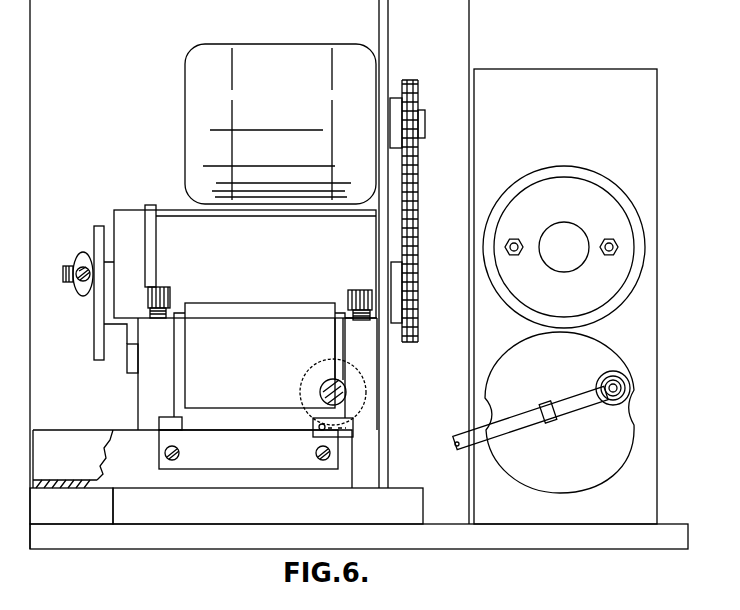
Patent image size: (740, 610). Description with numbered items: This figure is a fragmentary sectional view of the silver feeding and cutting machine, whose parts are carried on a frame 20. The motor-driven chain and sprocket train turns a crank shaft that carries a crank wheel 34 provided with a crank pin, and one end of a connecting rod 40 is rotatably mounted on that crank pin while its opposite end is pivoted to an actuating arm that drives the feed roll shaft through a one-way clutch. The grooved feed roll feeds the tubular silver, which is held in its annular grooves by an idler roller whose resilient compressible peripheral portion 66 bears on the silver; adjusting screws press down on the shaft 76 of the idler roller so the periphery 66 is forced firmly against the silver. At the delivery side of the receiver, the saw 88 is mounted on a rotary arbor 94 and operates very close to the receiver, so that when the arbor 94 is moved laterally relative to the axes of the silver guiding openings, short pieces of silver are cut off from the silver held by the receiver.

The frame 20 is at (380, 504).
The crank wheel 34 is at (93, 348).
The connecting rod 40 is at (77, 288).
The resilient compressable peripheral portion 66 is at (238, 317).
The shaft 76 is at (127, 363).
The saw 88 is at (358, 393).
The rotary arbor 94 is at (345, 378).